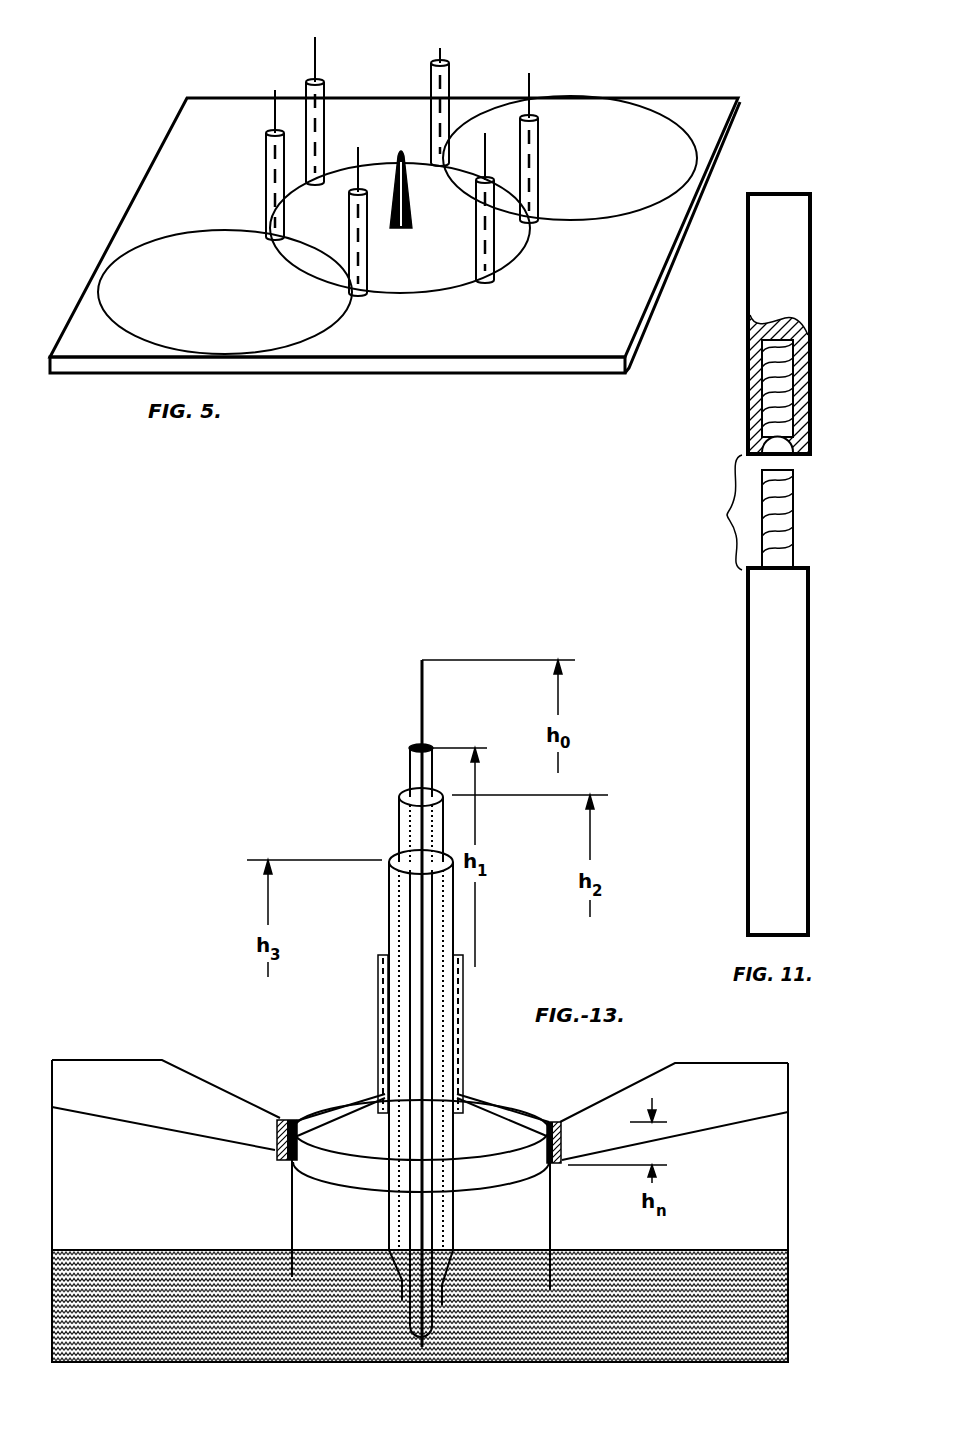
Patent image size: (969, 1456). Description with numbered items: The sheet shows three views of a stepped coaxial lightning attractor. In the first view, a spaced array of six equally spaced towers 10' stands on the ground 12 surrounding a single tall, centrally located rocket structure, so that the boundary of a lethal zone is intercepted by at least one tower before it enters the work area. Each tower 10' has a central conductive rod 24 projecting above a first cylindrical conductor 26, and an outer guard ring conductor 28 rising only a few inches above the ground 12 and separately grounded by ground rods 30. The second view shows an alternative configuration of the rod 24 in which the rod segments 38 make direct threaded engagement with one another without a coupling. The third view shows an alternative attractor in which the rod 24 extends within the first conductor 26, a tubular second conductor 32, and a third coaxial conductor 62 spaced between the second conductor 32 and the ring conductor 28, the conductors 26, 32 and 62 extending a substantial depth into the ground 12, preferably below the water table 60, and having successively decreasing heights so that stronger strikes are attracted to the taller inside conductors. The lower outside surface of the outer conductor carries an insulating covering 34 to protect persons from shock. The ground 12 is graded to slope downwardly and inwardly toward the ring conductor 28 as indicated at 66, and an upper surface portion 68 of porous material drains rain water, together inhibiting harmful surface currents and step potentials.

In FIG. 5, the tower 10' is at (432, 160).
In FIG. 5, the ground 12 is at (564, 331).
In FIG. 11, the rod segments 38 is at (812, 290).
In FIG. 13, the central conductive rod 24 is at (422, 700).
In FIG. 13, the first cylindrical conductor 26 is at (409, 766).
In FIG. 13, the second conductor 32 is at (398, 820).
In FIG. 13, the third coaxial conductor 62 is at (389, 907).
In FIG. 13, the covering 34 is at (463, 1072).
In FIG. 13, the ring conductor 28 is at (292, 1120).
In FIG. 13, the ground rod 30 is at (290, 1224).
In FIG. 13, the sloping region 66 is at (489, 1147).
In FIG. 13, the upper surface portion 68 is at (736, 1111).
In FIG. 13, the water table 60 is at (676, 1304).